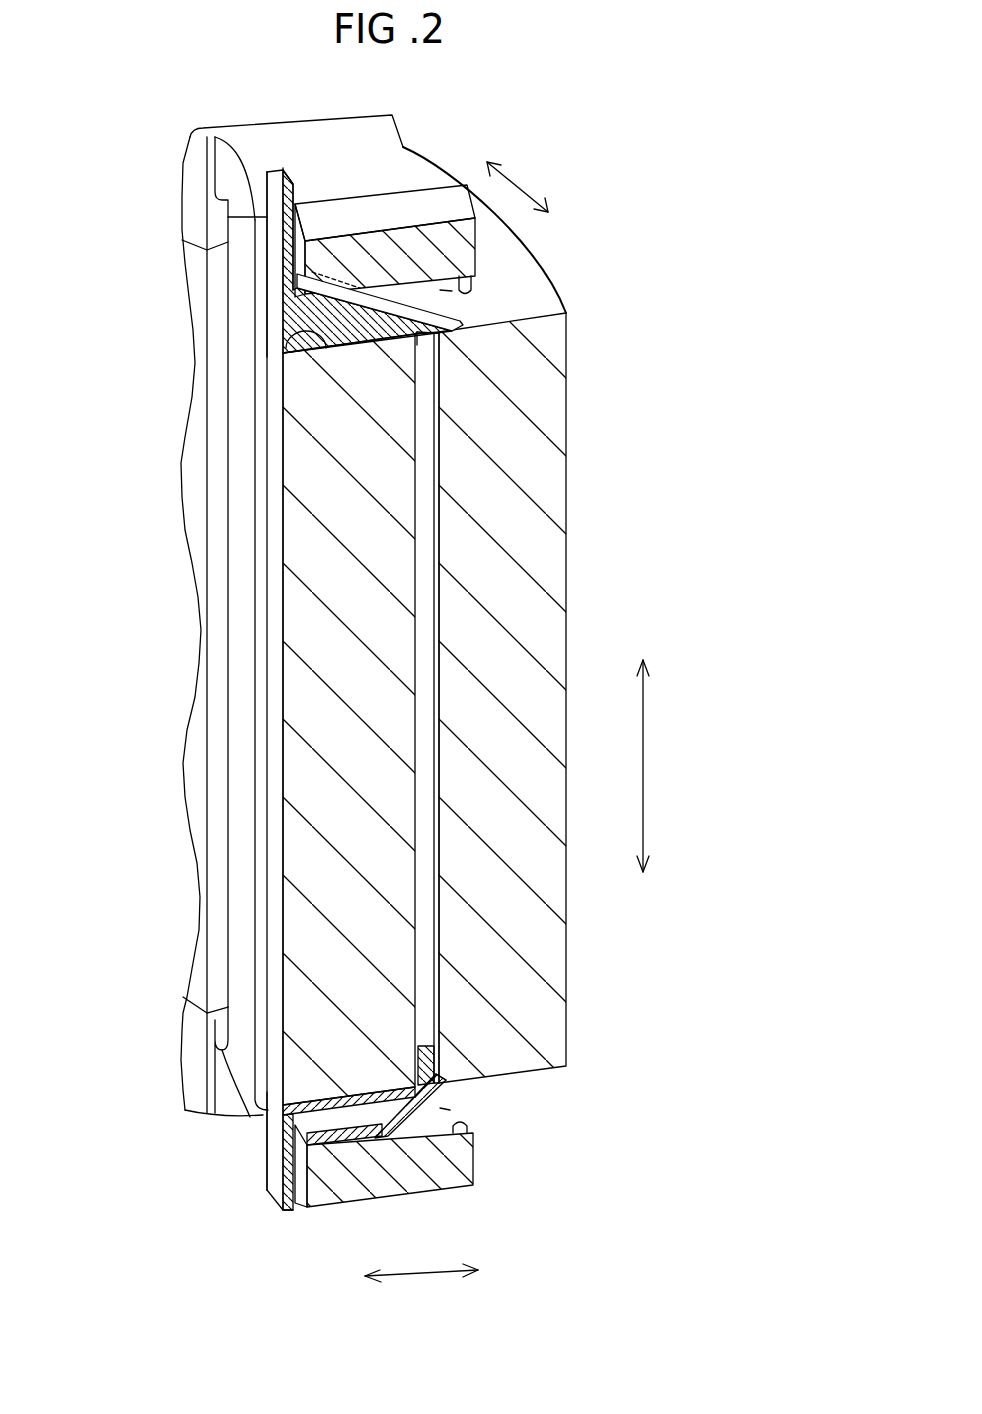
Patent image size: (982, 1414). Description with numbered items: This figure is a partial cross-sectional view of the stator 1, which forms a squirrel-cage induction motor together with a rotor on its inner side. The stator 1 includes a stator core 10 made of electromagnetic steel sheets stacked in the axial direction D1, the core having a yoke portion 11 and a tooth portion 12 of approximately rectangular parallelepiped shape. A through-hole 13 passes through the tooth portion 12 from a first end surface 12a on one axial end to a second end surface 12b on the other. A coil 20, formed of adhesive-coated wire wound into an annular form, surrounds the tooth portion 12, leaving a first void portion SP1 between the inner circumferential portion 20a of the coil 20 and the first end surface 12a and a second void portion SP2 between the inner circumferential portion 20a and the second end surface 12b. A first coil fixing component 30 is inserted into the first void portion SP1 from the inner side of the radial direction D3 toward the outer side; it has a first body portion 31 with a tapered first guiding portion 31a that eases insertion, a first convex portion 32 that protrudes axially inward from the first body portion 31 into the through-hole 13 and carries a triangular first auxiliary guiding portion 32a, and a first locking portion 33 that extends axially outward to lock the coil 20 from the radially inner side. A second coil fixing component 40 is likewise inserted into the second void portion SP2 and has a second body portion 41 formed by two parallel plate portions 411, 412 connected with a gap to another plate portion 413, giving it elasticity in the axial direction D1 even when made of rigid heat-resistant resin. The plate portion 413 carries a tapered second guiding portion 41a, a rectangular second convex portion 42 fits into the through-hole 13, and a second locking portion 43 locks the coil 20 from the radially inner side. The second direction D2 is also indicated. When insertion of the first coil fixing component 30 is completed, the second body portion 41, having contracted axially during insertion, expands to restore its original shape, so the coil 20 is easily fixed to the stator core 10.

The stator 1 is at (603, 148).
The stator core 10 is at (582, 408).
The yoke portion 11 is at (566, 530).
The tooth portion 12 is at (283, 548).
The first end surface 12a is at (330, 338).
The second end surface 12b is at (287, 1118).
The through-hole 13 is at (438, 424).
The coil 20 is at (425, 205).
The inner circumferential portion 20a is at (476, 278).
The first coil fixing component 30 is at (252, 277).
The first body portion 31 is at (268, 317).
The first guiding portion 31a is at (470, 325).
The first convex portion 32 is at (413, 333).
The first auxiliary guiding portion 32a is at (417, 334).
The first locking portion 33 is at (270, 214).
The second coil fixing component 40 is at (260, 1146).
The second body portion 41 is at (335, 1098).
The second guiding portion 41a is at (452, 1086).
The plate portion 411 is at (335, 1108).
The plate portion 412 is at (395, 1134).
The plate portion 413 is at (428, 1120).
The second convex portion 42 is at (418, 1047).
The second locking portion 43 is at (270, 1185).
The first void portion SP1 is at (452, 291).
The second void portion SP2 is at (450, 1110).
The axial direction D1 is at (656, 771).
The second direction D2 is at (517, 185).
The radial direction D3 is at (423, 1282).